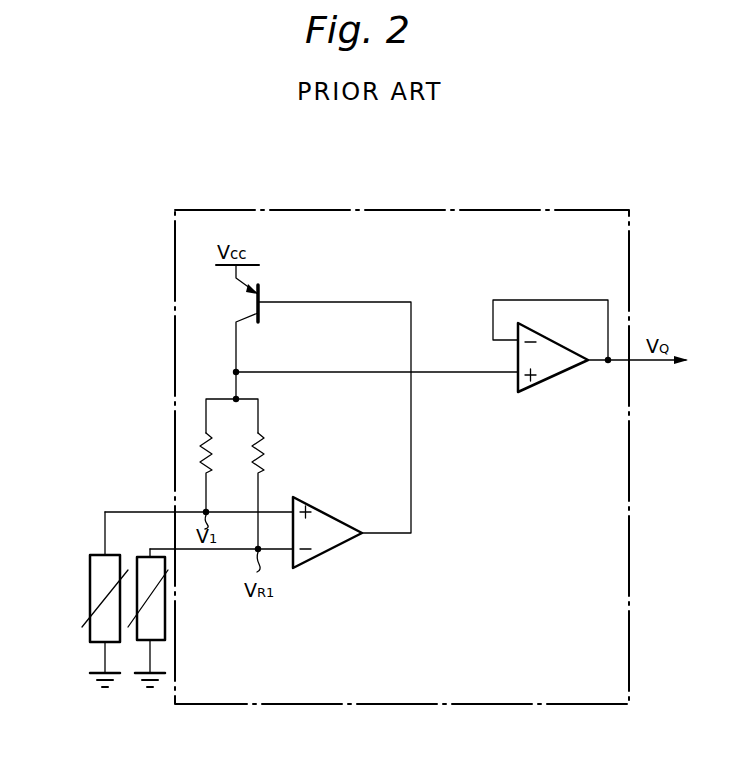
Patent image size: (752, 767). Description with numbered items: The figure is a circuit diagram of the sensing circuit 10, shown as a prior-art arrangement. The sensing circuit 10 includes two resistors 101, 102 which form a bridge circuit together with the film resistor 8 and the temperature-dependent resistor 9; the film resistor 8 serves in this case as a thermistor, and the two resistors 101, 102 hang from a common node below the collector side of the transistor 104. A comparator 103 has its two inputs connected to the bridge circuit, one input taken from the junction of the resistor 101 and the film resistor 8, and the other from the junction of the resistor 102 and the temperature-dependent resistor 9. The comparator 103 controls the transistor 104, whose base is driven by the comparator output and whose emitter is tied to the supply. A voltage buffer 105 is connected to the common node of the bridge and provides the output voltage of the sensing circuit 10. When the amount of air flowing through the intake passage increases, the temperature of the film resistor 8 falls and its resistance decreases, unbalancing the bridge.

The sensing circuit 10 is at (553, 210).
The film resistor 8 is at (90, 602).
The temperature-dependent resistor 9 is at (165, 608).
The resistor 101 is at (213, 450).
The resistor 102 is at (264, 457).
The comparator 103 is at (350, 520).
The transistor 104 is at (261, 304).
The voltage buffer 105 is at (545, 383).